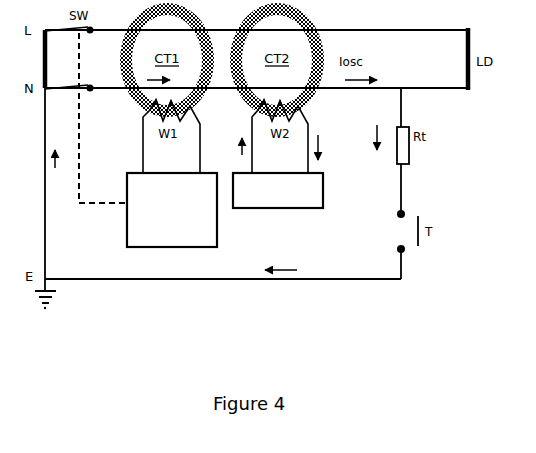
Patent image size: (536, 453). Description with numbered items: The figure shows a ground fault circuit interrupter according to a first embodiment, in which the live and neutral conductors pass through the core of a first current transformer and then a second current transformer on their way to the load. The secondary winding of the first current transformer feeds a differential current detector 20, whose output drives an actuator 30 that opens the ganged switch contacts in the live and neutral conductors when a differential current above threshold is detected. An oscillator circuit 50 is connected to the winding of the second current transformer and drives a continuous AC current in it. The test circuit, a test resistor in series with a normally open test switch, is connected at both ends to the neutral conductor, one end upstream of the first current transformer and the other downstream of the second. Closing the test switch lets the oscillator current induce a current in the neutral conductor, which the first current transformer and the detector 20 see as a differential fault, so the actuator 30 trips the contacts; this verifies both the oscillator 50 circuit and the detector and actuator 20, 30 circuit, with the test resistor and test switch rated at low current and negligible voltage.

The differential current detector circuit 20 is at (201, 210).
The actuator 30 is at (217, 215).
The oscillator circuit 50 is at (323, 193).